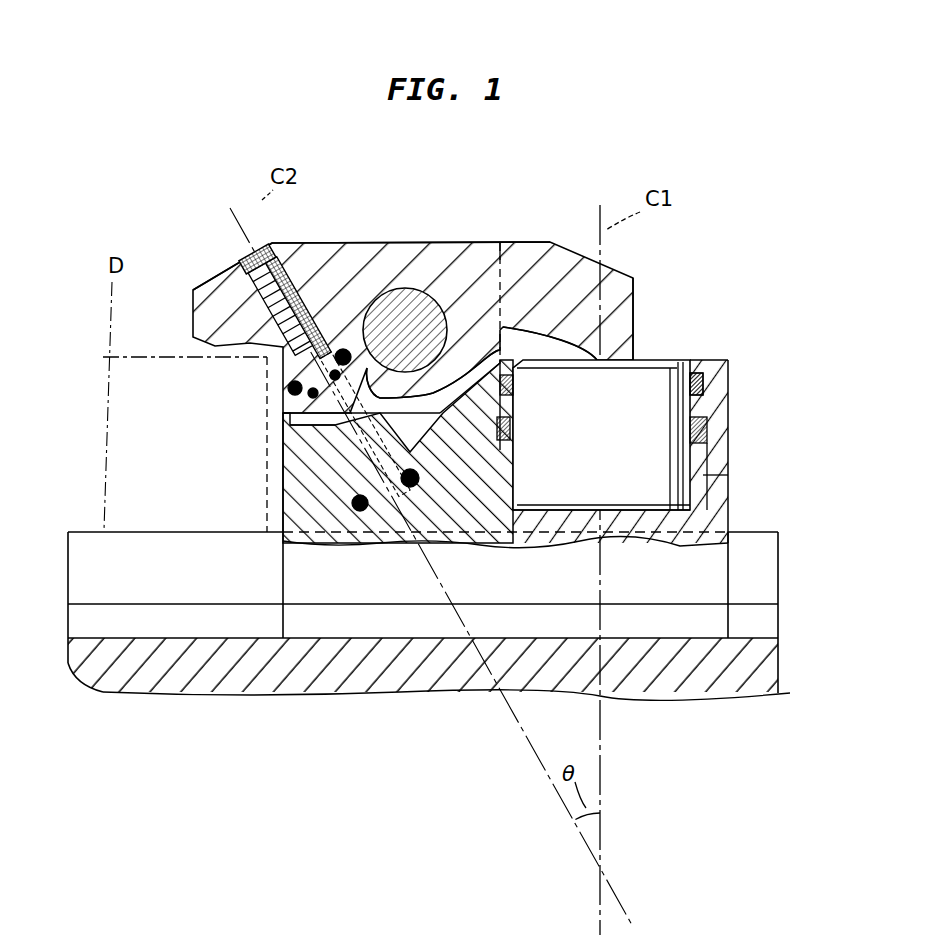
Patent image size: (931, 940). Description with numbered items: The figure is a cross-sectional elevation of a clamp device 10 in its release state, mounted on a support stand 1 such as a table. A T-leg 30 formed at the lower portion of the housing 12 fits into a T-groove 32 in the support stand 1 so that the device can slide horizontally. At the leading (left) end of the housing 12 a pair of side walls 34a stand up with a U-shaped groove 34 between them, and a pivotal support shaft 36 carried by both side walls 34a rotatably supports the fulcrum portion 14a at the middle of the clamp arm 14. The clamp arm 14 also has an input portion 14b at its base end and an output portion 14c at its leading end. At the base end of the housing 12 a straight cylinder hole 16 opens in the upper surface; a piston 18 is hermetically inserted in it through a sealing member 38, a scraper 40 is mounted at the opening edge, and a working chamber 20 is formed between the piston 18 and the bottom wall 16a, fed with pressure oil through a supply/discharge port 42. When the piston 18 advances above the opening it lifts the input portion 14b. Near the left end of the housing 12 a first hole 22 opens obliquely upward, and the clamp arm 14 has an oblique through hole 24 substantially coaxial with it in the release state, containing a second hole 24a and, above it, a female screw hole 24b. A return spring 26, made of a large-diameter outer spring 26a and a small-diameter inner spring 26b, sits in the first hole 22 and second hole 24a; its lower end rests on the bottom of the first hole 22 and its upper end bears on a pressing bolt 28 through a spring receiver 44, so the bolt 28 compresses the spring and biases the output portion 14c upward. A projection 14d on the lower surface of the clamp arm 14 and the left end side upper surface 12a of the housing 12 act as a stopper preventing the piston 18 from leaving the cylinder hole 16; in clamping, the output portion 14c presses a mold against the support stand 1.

The support stand 1 is at (235, 677).
The clamp device 10 is at (188, 188).
The housing 12 is at (276, 513).
The left end side upper surface 12a is at (297, 427).
The clamp arm 14 is at (430, 220).
The fulcrum portion 14a is at (392, 318).
The input portion 14b is at (633, 345).
The output portion 14c is at (207, 322).
The projection 14d is at (283, 420).
The cylinder hole 16 is at (513, 408).
The bottom wall 16a is at (558, 507).
The piston 18 is at (678, 340).
The working chamber 20 is at (630, 513).
The first hole 22 is at (283, 532).
The through hole 24 is at (312, 330).
The second hole 24a is at (382, 398).
The female screw hole 24b is at (277, 315).
The return spring 26 is at (274, 400).
The outer spring 26a is at (360, 512).
The inner spring 26b is at (380, 523).
The pressing bolt 28 is at (240, 262).
The T-leg 30 is at (633, 600).
The T-groove 32 is at (210, 640).
The groove 34 is at (500, 355).
The side walls 34a is at (502, 255).
The pivotal support shaft 36 is at (417, 303).
The sealing member 38 is at (728, 430).
The scraper 40 is at (704, 372).
The supply/discharge port 42 is at (715, 494).
The spring receiver 44 is at (294, 374).